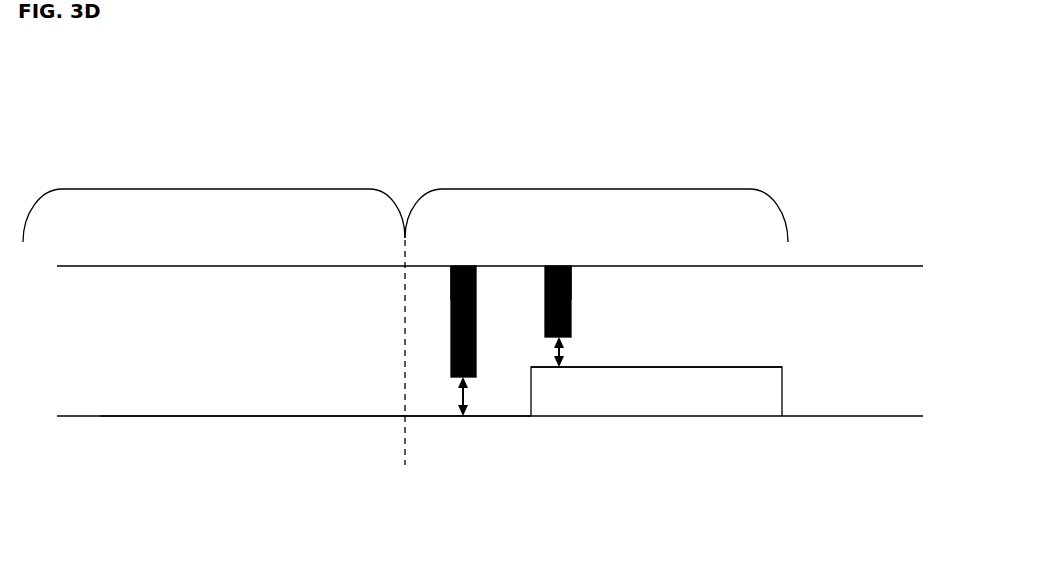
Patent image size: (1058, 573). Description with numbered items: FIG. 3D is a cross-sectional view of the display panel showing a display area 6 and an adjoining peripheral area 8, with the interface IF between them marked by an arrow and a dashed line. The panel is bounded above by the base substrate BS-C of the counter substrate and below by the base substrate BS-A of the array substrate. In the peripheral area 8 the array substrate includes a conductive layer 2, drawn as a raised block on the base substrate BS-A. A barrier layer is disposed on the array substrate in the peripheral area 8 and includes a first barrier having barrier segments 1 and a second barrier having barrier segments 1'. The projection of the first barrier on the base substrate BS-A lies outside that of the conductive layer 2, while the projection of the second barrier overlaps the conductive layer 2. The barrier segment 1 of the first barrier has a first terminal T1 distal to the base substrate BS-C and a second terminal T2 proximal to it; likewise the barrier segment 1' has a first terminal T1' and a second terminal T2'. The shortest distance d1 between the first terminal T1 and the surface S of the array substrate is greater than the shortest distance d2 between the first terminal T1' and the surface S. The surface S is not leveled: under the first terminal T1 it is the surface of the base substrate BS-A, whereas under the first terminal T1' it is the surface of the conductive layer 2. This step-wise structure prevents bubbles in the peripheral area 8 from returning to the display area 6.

The display area 6 is at (216, 189).
The peripheral area 8 is at (596, 189).
The interface IF is at (405, 200).
The base substrate of the counter substrate BS-C is at (493, 249).
The base substrate of the array substrate BS-A is at (493, 440).
The barrier segment 1 is at (463, 321).
The barrier segment 1' is at (558, 301).
The first terminal of the first barrier T1 is at (397, 375).
The second terminal of the first barrier T2 is at (385, 300).
The first terminal of the second barrier T1' is at (620, 337).
The second terminal of the second barrier T2' is at (633, 292).
The shortest distance d1 is at (468, 396).
The shortest distance d2 is at (553, 352).
The conductive layer 2 is at (697, 392).
The surface of the array substrate S is at (108, 416).